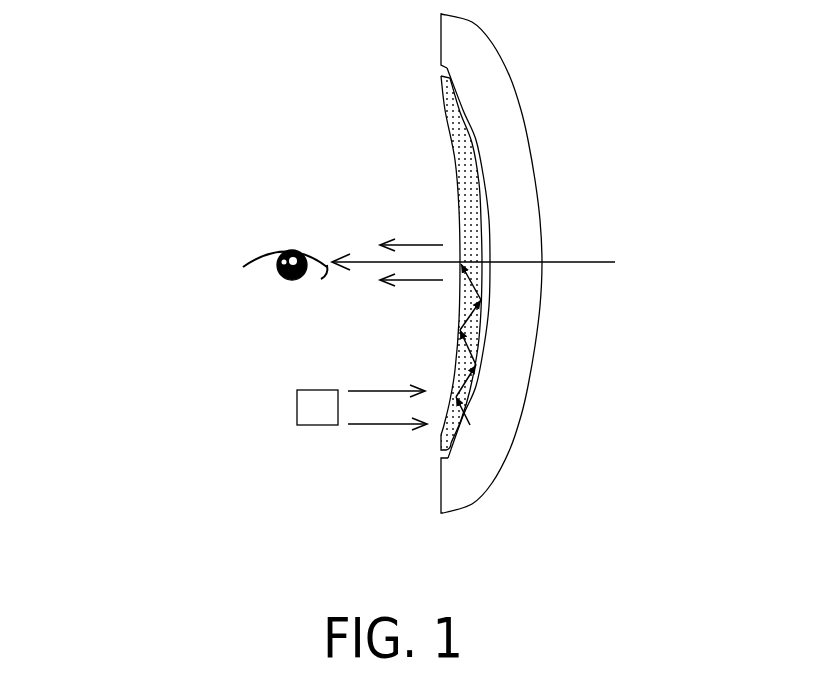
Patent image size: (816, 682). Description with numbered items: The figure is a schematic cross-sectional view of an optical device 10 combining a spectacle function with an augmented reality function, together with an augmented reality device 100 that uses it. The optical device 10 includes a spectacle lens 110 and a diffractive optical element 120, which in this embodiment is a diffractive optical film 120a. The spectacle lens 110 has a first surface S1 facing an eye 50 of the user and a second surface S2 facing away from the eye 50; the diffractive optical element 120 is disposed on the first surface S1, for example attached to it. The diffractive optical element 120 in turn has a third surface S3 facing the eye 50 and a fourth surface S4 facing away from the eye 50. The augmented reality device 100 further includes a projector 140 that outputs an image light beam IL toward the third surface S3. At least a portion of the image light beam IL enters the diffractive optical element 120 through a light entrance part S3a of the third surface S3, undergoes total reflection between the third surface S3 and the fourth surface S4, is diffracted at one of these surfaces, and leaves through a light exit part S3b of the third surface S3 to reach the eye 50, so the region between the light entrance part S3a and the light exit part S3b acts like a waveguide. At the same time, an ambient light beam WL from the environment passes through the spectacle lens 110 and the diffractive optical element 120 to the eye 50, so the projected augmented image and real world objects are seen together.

The augmented reality device 100 is at (677, 560).
The optical device 10 is at (103, 33).
The spectacle lens 110 is at (462, 33).
The diffractive optical element 120 is at (397, 306).
The diffractive optical film 120a is at (446, 108).
The projector 140 is at (308, 408).
The eye 50 is at (260, 278).
The first surface S1 is at (444, 74).
The second surface S2 is at (520, 100).
The third surface S3 is at (387, 320).
The light entrance part S3a is at (447, 410).
The light exit part S3b is at (460, 265).
The fourth surface S4 is at (477, 158).
The image light beam IL is at (410, 244).
The ambient light beam WL is at (587, 262).